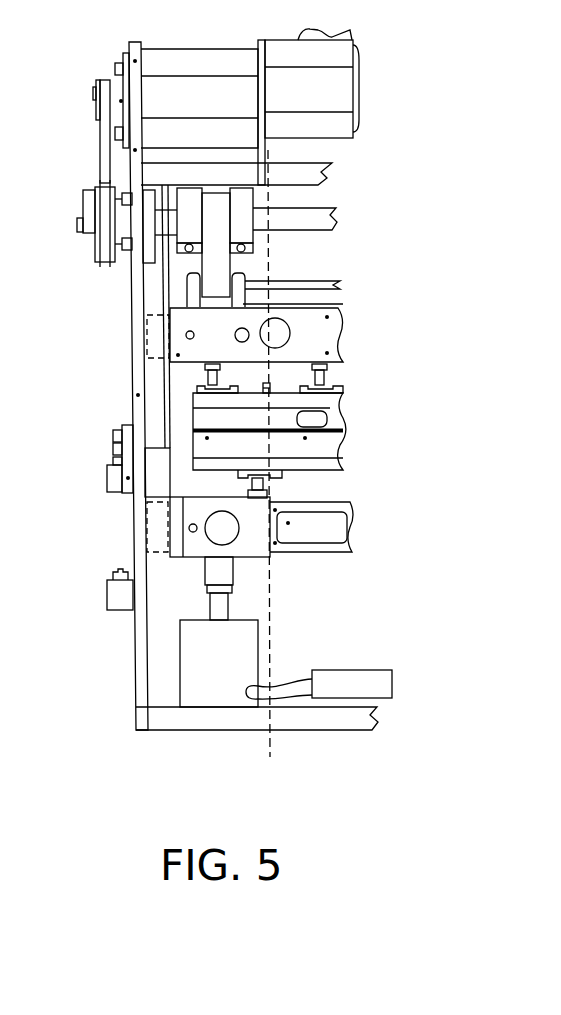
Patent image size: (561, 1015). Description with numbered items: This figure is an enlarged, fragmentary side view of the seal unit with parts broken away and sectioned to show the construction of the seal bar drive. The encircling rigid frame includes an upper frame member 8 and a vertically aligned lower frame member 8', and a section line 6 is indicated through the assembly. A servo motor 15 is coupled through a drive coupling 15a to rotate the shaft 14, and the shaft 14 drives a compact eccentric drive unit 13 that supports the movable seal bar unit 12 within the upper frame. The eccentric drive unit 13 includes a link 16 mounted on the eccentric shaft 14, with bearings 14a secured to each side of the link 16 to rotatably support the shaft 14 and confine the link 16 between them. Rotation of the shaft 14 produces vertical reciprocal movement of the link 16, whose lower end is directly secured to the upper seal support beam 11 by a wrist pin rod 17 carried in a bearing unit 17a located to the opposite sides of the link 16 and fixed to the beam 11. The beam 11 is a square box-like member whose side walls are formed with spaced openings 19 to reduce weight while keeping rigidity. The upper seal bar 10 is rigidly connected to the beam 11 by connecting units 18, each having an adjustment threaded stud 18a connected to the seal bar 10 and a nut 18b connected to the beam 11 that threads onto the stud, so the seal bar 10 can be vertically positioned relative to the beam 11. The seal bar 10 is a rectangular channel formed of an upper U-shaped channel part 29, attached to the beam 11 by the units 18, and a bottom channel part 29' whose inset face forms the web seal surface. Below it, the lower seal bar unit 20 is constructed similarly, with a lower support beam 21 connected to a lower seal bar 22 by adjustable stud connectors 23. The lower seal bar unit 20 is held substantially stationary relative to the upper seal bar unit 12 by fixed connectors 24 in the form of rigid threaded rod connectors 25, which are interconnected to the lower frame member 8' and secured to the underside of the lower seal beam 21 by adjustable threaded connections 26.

The servo motor 15 is at (246, 40).
The drive coupling 15a is at (100, 152).
The bearings 14a is at (243, 195).
The center line / section line 6 is at (269, 154).
The upper frame member 8 is at (263, 162).
The rotating shaft 14 is at (336, 220).
The link 16 is at (223, 262).
The wrist pin rod 17 is at (334, 285).
The openings 19 is at (303, 306).
The bearing unit 17a is at (225, 308).
The eccentric drive unit 13 is at (187, 266).
The seal bar unit 12 is at (333, 401).
The upper seal support beam 11 is at (322, 345).
The connecting units 18 is at (200, 379).
The adjustment threaded stud 18a is at (267, 384).
The nut 18b is at (268, 355).
The upper U-shaped channel part 29 is at (317, 546).
The bottom U-shaped channel part 29' is at (305, 431).
The upper seal bar 10 is at (312, 419).
The lower seal bar unit 20 is at (330, 497).
The lower seal bar 22 is at (298, 462).
The adjustable stud connectors 23 is at (244, 486).
The lower support beam 21 is at (313, 548).
The adjustable threaded connections 26 is at (203, 575).
The fixed connectors 24 is at (233, 605).
The rigid threaded rod connectors 25 is at (220, 612).
The lower frame member 8' is at (257, 736).